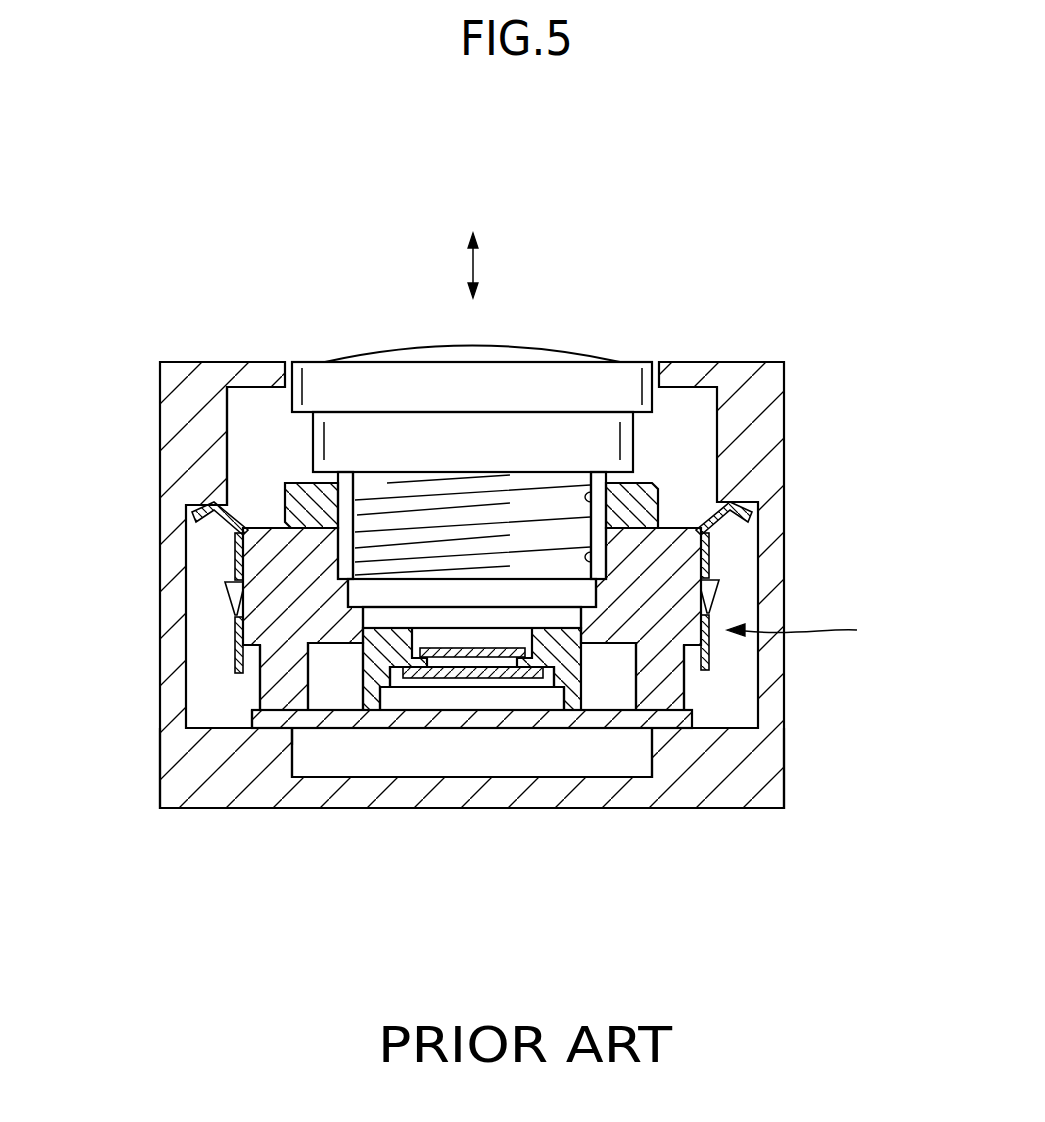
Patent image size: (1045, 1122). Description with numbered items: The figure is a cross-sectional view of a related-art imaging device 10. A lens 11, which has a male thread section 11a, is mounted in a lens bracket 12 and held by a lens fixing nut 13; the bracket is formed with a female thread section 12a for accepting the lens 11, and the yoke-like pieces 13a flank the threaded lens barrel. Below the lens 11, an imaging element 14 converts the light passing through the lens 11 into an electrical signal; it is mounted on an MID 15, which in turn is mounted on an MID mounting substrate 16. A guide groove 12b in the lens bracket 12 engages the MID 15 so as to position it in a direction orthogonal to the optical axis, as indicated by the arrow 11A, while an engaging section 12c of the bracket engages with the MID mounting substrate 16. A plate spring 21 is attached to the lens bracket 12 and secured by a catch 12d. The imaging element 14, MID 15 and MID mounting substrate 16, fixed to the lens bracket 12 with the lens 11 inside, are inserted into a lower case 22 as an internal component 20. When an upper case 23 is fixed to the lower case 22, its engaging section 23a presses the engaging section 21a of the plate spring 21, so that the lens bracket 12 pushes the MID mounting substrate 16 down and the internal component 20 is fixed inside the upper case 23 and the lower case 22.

The imaging device 10 is at (466, 447).
The lens 11 is at (633, 372).
The arrow 11A is at (474, 262).
The male thread section 11a is at (388, 515).
The lens bracket 12 is at (667, 690).
The female thread section 12a is at (686, 552).
The guide groove 12b is at (337, 627).
The engaging section 12c is at (273, 740).
The catch 12d is at (232, 597).
The lens fixing nut 13 is at (660, 493).
The yoke 13a is at (610, 484).
The imaging element 14 is at (500, 675).
The MID 15 is at (378, 700).
The MID mounting substrate 16 is at (607, 720).
The internal component 20 is at (812, 631).
The plate spring 21 is at (232, 547).
The engaging section 21a is at (187, 505).
The lower case 22 is at (773, 758).
The upper case 23 is at (773, 402).
The engaging section 23a is at (212, 505).